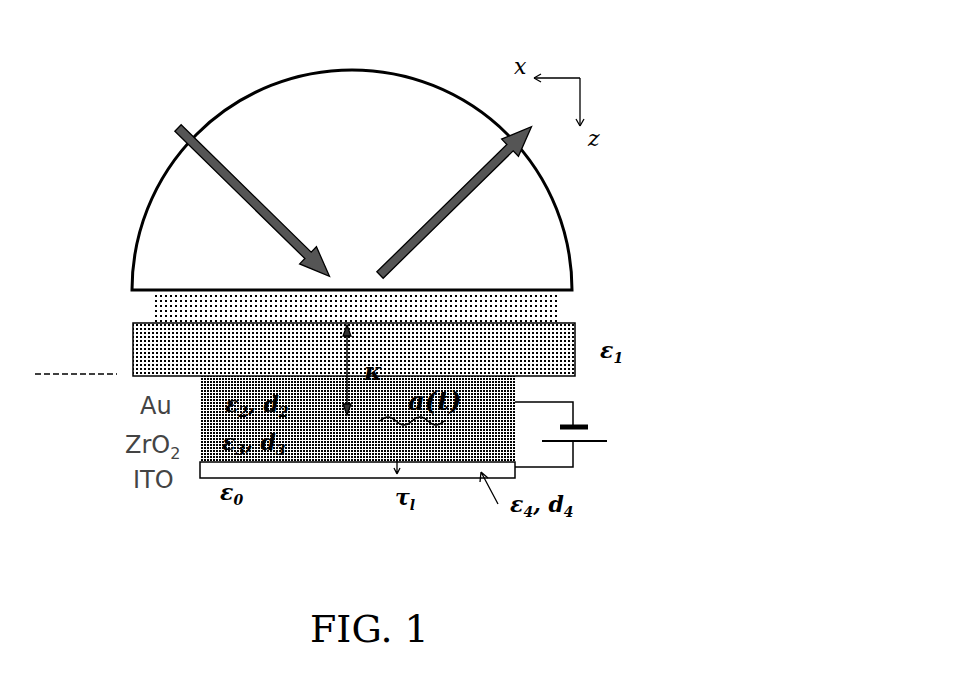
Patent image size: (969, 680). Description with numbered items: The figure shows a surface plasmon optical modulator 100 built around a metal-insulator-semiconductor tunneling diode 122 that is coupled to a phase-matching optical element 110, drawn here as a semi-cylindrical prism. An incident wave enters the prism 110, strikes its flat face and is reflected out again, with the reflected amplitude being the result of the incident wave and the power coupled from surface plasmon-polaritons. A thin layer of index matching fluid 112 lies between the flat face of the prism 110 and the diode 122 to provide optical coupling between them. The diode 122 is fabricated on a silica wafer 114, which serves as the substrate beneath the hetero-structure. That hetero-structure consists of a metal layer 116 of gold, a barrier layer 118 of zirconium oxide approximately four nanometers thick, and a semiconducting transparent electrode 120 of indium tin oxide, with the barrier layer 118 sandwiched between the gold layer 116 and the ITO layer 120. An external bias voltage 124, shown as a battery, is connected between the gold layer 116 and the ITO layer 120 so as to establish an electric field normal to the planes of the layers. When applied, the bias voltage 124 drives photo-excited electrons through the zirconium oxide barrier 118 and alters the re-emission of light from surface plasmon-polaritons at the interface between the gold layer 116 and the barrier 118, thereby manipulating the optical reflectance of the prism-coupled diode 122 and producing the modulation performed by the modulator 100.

The surface plasmon optical modulator 100 is at (443, 39).
The phase-matching optical element 110 is at (533, 254).
The matching fluid 112 is at (520, 305).
The silica wafer 114 is at (550, 341).
The metal layer 116 is at (215, 407).
The barrier layer 118 is at (422, 437).
The semiconducting transparent electrode 120 is at (312, 472).
The MIS tunneling diode 122 is at (625, 338).
The external bias voltage 124 is at (577, 448).